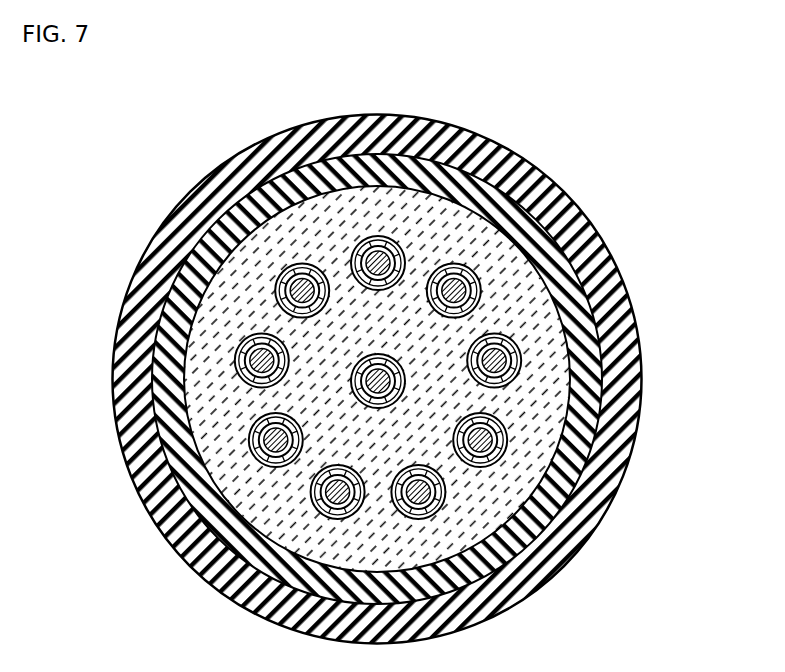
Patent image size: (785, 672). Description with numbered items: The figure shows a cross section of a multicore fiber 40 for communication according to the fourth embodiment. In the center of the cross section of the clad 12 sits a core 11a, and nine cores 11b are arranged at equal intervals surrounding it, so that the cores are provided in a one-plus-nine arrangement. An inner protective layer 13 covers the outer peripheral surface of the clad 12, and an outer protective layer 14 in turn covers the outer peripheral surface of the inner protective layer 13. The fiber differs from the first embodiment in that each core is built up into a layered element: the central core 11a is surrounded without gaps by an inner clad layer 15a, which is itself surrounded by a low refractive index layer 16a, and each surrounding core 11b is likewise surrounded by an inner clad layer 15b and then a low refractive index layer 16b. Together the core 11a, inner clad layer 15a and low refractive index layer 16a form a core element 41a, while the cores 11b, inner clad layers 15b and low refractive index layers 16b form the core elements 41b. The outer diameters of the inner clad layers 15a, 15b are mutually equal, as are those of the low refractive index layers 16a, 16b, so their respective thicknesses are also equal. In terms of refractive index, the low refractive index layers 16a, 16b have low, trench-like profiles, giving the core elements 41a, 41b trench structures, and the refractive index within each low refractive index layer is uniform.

The multicore fiber 40 is at (662, 112).
The outer protective layer 14 is at (622, 375).
The inner protective layer 13 is at (590, 430).
The clad 12 is at (532, 252).
The core elements 41b is at (284, 266).
The core element 41a is at (344, 388).
The low refractive index layers 16b is at (350, 258).
The inner clad layers 15b is at (364, 245).
The cores 11b is at (380, 252).
The low refractive index layer 16a is at (355, 392).
The inner clad layer 15a is at (363, 372).
The core 11a is at (372, 372).